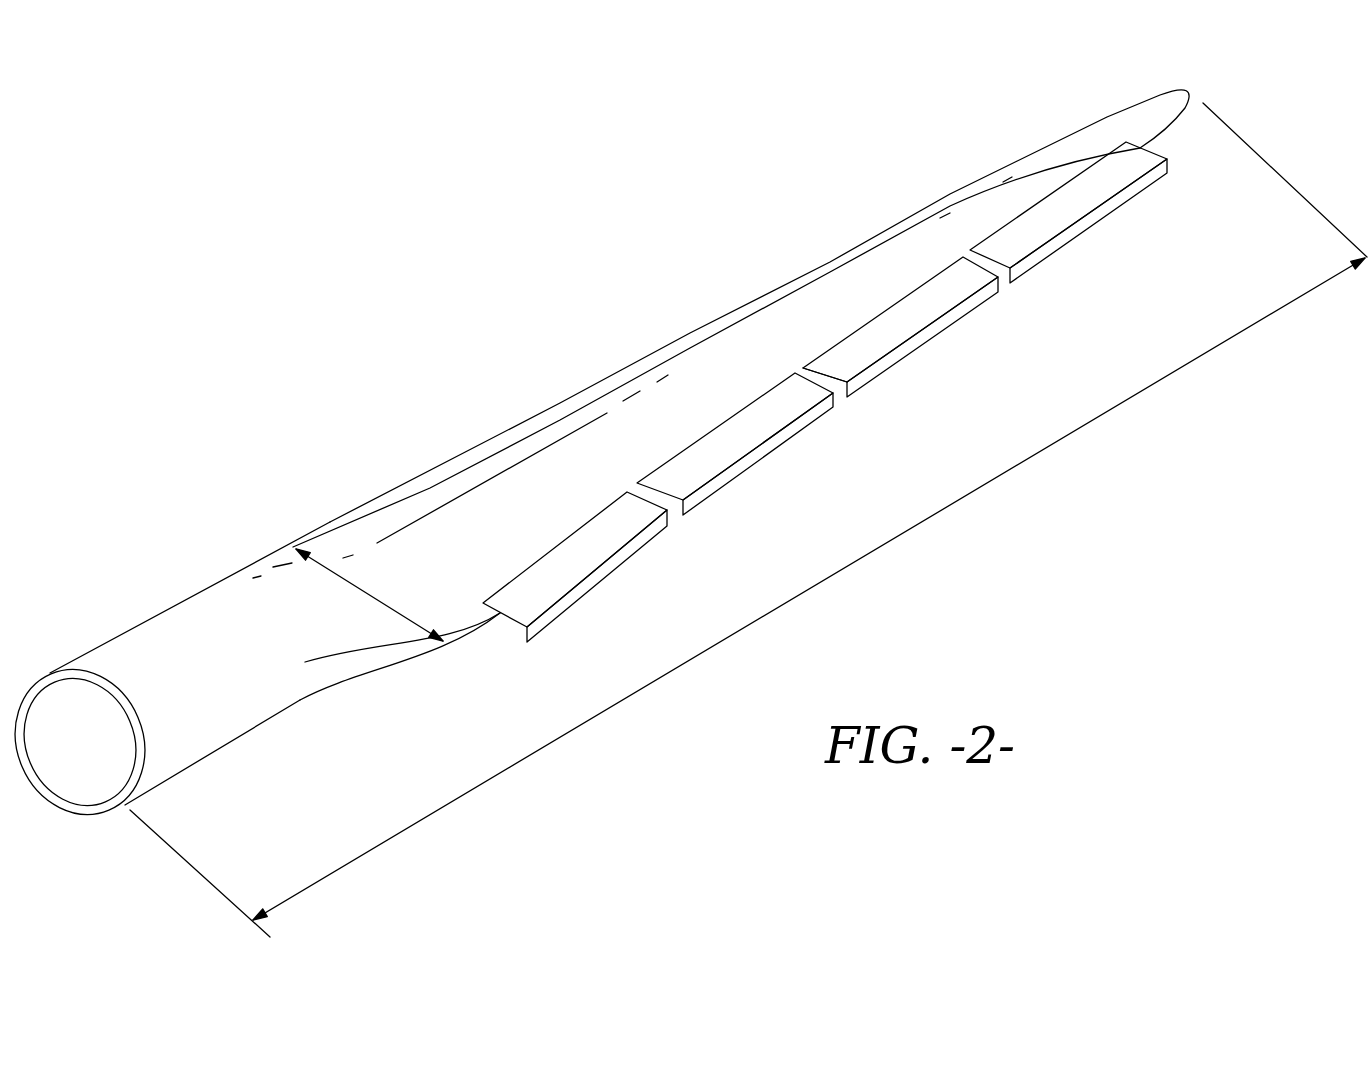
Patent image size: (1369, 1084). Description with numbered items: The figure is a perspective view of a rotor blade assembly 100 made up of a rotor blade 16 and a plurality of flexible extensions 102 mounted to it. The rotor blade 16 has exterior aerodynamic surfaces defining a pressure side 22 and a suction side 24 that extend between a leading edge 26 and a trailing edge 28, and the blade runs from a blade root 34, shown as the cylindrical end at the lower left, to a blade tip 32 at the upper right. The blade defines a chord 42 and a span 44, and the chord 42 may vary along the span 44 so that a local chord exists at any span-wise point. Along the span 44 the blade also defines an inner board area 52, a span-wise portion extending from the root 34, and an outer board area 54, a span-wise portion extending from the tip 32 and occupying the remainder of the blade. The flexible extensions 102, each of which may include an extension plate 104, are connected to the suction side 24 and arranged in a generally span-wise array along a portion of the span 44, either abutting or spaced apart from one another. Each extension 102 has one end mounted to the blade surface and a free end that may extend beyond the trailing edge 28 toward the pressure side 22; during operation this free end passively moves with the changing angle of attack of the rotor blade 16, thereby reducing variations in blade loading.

The rotor blade assembly 100 is at (285, 255).
The rotor blade 16 is at (210, 649).
The blade root 34 is at (95, 765).
The pressure side 22 is at (358, 690).
The chord 42 is at (350, 587).
The suction side 24 is at (895, 257).
The leading edge 26 is at (398, 488).
The inner board area 52 is at (560, 463).
The outer board area 54 is at (847, 293).
The extension plate 104 is at (537, 597).
The flexible extension 102 is at (751, 488).
The trailing edge 28 is at (822, 373).
The span 44 is at (972, 490).
The blade tip 32 is at (1205, 80).